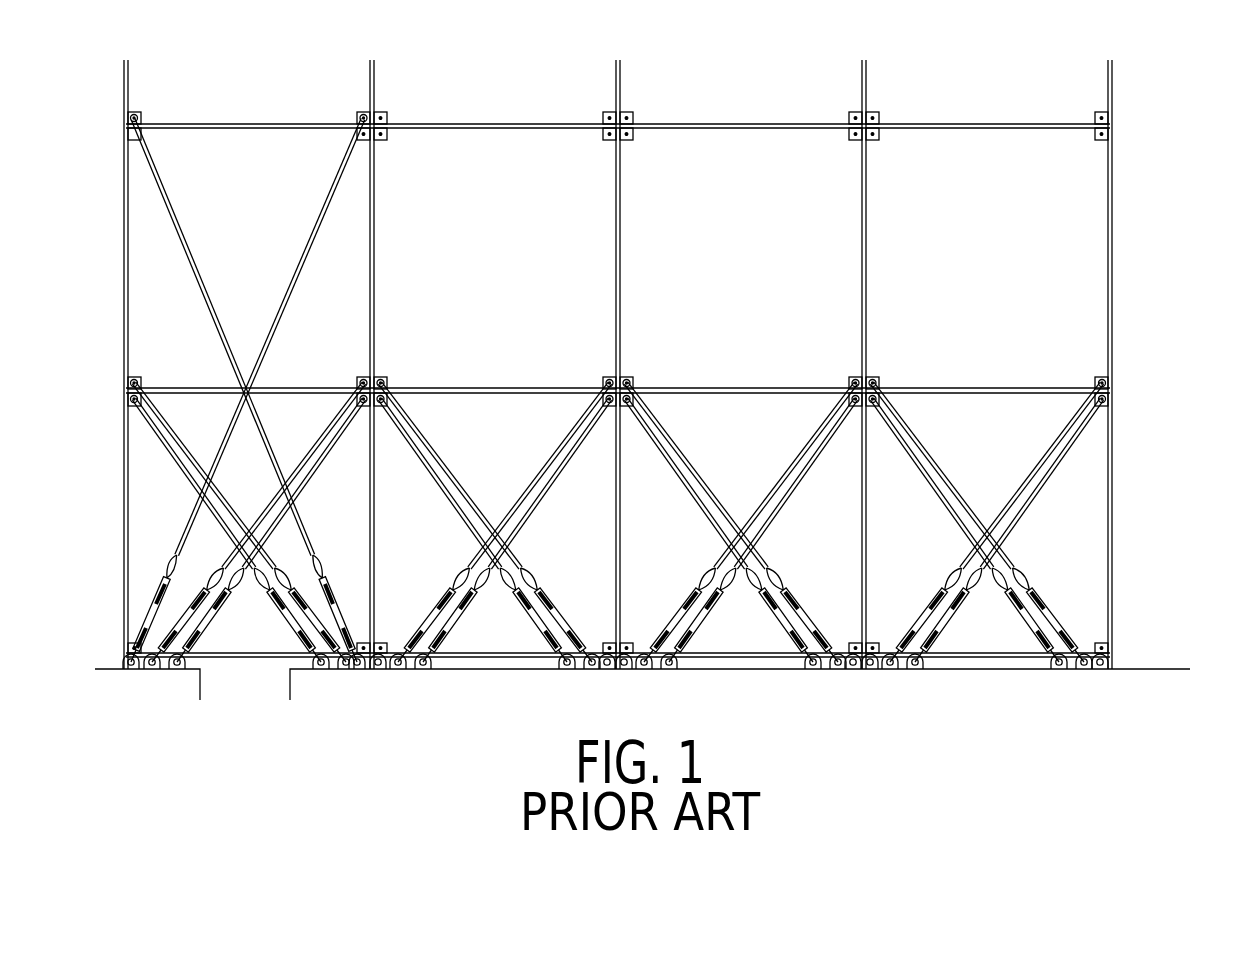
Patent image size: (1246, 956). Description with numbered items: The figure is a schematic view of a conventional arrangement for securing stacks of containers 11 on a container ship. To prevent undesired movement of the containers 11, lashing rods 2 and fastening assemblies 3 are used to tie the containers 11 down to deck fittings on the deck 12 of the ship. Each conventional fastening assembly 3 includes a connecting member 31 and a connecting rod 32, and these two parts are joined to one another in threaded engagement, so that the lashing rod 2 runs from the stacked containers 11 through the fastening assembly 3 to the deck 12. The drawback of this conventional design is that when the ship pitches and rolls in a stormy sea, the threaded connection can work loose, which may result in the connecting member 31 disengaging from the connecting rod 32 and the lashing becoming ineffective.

The containers 11 is at (1110, 254).
The deck 12 is at (1142, 670).
The lashing rod 2 is at (1058, 487).
The fastening assembly 3 is at (1063, 612).
The connecting member 31 is at (1068, 605).
The connecting rod 32 is at (836, 662).